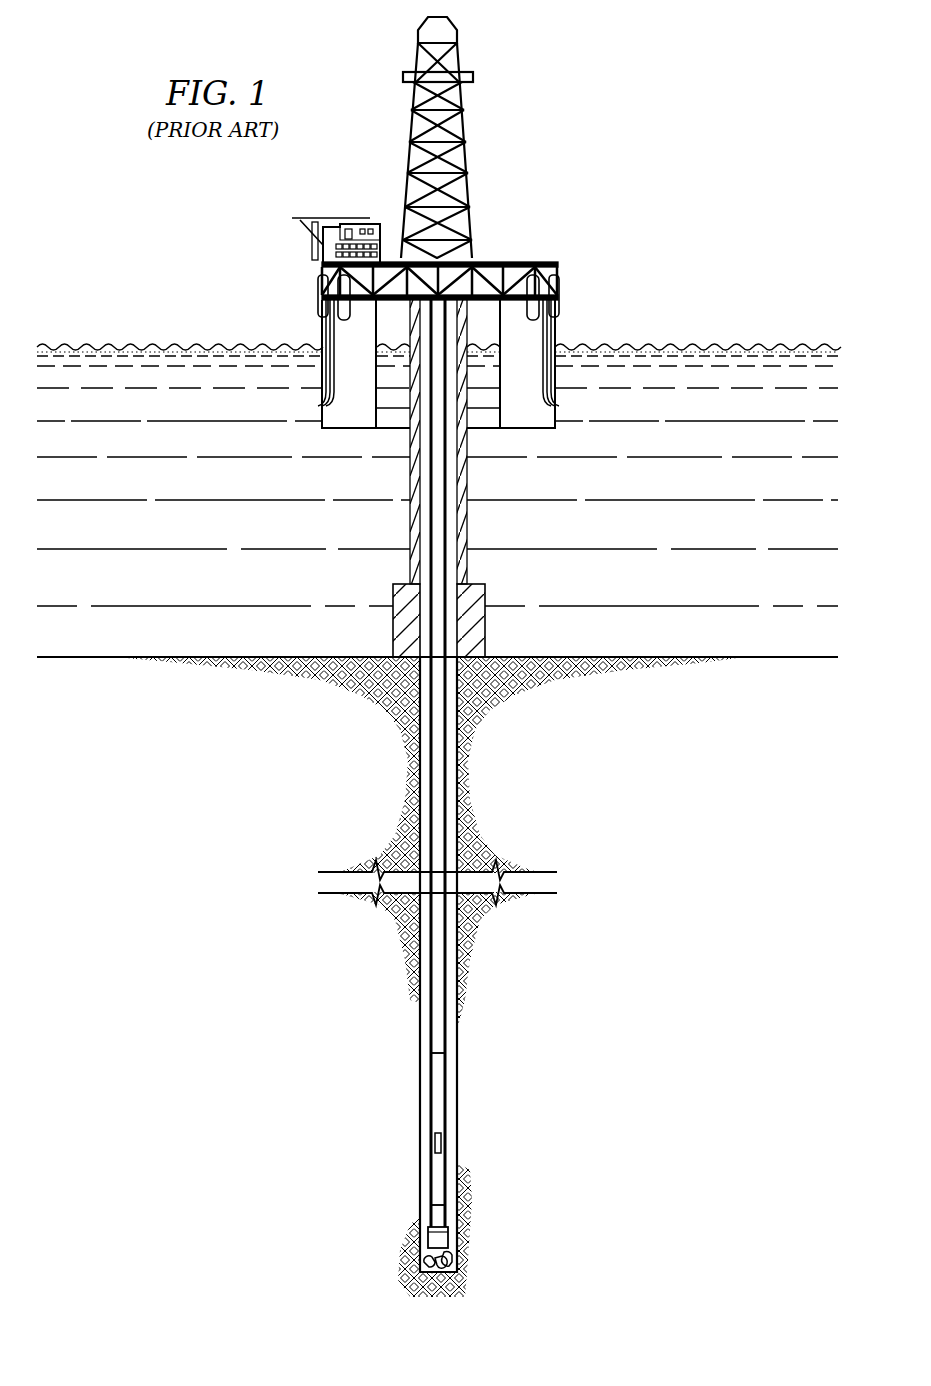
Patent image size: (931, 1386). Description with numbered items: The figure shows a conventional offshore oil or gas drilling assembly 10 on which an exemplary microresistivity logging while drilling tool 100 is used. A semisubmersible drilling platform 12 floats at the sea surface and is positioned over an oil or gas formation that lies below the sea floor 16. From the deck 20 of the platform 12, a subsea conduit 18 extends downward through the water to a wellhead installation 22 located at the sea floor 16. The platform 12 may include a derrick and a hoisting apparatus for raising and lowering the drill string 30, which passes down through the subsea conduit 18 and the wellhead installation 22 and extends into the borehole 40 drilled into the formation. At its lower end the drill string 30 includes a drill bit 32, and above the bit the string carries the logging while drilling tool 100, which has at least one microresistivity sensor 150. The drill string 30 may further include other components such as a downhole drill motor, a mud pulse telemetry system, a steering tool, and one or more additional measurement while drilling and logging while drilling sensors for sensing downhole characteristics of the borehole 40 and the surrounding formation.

The offshore oil or gas drilling assembly 10 is at (540, 149).
The semisubmersible drilling platform 12 is at (546, 262).
The sea floor 16 is at (707, 657).
The subsea conduit 18 is at (467, 524).
The deck 20 is at (512, 303).
The wellhead installation 22 is at (480, 574).
The drill string 30 is at (440, 462).
The drill bit 32 is at (456, 1262).
The borehole 40 is at (450, 778).
The microresistivity logging while drilling tool 100 is at (431, 1081).
The microresistivity sensor 150 is at (435, 1144).